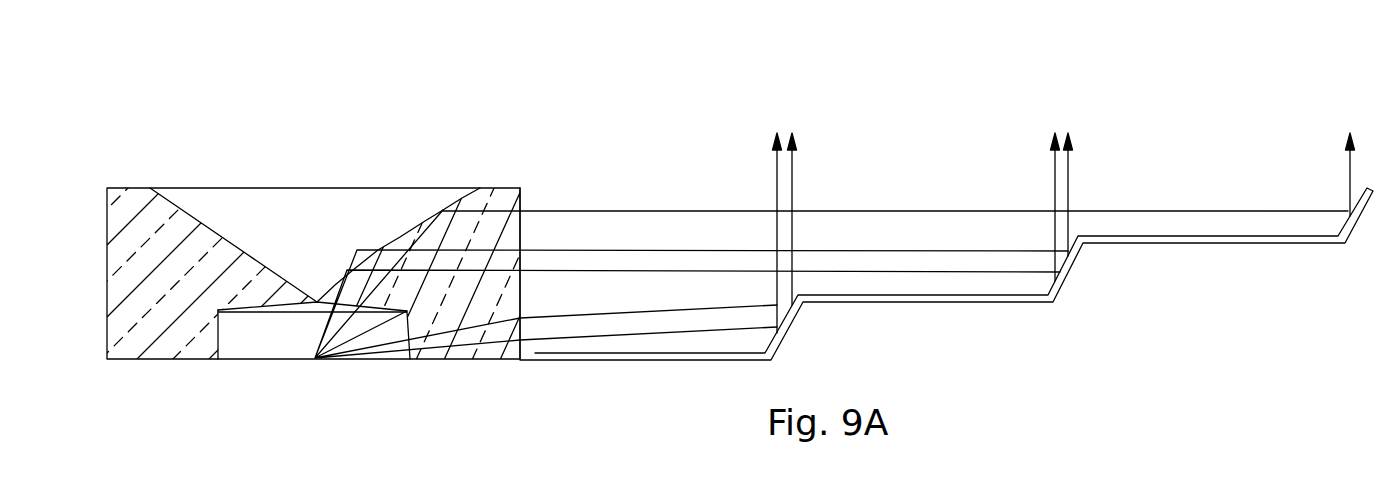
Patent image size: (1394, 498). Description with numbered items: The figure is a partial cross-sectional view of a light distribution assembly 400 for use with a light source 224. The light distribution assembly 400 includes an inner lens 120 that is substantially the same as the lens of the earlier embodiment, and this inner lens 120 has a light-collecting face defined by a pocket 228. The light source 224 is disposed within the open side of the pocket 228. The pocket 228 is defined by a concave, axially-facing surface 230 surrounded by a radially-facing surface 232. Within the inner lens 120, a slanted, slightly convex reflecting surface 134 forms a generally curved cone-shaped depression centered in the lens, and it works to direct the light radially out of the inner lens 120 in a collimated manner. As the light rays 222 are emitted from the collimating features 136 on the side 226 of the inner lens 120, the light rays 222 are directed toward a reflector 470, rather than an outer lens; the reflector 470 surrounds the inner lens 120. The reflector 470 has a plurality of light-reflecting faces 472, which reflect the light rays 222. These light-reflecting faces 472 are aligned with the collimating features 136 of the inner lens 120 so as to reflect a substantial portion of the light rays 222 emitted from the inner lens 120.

The inner lens 120 is at (182, 158).
The reflecting surface 134 is at (397, 237).
The collimating features 136 is at (503, 200).
The side of the inner lens 226 is at (522, 200).
The light rays 222 is at (643, 212).
The light source 224 is at (315, 358).
The pocket 228 is at (273, 333).
The axially-facing surface 230 is at (247, 313).
The radially-facing surface 232 is at (216, 338).
The light distribution assembly 400 is at (665, 87).
The reflector 470 is at (1245, 302).
The light-reflecting faces 472 is at (777, 322).